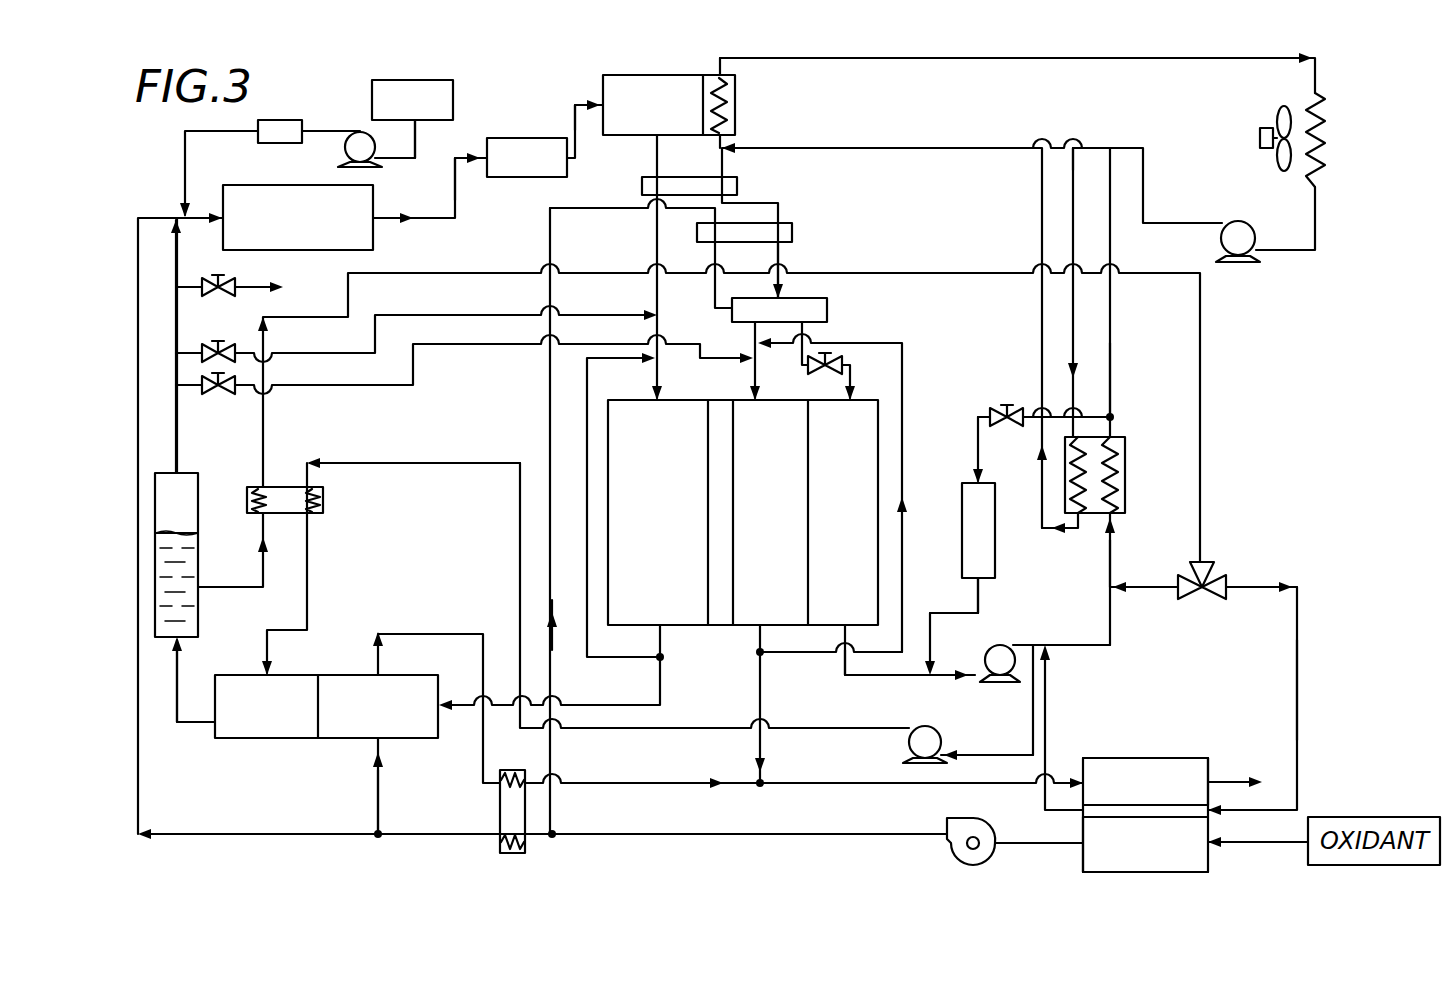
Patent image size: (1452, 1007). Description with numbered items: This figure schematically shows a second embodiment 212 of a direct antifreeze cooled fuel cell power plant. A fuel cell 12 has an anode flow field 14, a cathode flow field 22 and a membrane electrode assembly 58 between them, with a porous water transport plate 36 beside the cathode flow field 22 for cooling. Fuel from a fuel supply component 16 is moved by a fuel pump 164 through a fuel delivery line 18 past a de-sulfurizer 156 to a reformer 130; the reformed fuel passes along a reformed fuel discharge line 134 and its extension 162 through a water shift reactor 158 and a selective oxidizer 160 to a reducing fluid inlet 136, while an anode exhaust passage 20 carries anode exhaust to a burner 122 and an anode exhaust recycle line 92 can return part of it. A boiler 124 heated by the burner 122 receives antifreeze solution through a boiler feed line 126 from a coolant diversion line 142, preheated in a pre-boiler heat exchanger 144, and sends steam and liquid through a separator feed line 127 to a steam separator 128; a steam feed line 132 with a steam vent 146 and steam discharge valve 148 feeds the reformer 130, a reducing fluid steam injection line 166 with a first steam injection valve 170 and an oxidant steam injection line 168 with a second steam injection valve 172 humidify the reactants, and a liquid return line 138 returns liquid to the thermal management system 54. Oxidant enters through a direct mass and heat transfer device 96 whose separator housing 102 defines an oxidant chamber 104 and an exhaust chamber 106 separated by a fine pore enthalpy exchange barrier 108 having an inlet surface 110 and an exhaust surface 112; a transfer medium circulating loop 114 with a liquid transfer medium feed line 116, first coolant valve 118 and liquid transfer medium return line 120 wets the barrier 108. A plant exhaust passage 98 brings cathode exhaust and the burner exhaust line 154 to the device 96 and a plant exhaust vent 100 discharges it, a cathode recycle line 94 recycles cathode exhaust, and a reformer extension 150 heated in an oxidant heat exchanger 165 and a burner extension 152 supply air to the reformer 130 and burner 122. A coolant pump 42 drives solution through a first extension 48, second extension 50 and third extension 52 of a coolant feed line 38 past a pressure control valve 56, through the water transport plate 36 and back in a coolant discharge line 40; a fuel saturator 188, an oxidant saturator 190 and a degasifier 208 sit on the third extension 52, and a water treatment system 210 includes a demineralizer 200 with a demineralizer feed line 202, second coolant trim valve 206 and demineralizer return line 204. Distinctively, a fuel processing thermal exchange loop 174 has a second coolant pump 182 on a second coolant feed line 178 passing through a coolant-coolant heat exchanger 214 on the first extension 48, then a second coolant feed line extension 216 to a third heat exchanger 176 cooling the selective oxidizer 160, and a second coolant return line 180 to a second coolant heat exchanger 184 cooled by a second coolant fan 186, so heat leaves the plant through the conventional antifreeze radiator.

The fuel cell 12 is at (718, 660).
The anode flow field 14 is at (683, 512).
The fuel supply component 16 is at (454, 87).
The fuel delivery line 18 is at (416, 150).
The anode exhaust passage 20 is at (592, 703).
The cathode flow field 22 is at (793, 512).
The porous water transport plate 36 is at (863, 512).
The coolant feed line 38 is at (845, 365).
The coolant discharge line 40 is at (862, 676).
The coolant pump 42 is at (992, 679).
The coolant feed line first extension 48 is at (1115, 556).
The coolant feed line second extension 50 is at (1112, 353).
The coolant feed line third extension 52 is at (781, 256).
The thermal management system 54 is at (1043, 600).
The pressure control valve 56 is at (810, 368).
The membrane electrode assembly 58 is at (722, 400).
The anode exhaust recycle line 92 is at (587, 651).
The cathode recycle line 94 is at (905, 616).
The direct mass and heat transfer device 96 is at (1136, 757).
The plant exhaust passage 98 is at (891, 785).
The plant exhaust vent 100 is at (1222, 778).
The separator housing 102 is at (1083, 858).
The oxidant chamber 104 is at (1203, 867).
The exhaust chamber 106 is at (1097, 764).
The fine pore enthalpy exchange barrier 108 is at (1161, 812).
The inlet surface 110 is at (1104, 817).
The exhaust surface 112 is at (1127, 804).
The transfer medium circulating loop 114 is at (1228, 633).
The liquid transfer medium feed line 116 is at (1300, 686).
The first coolant valve 118 is at (1222, 571).
The liquid transfer medium return line 120 is at (1051, 691).
The burner 122 is at (421, 738).
The boiler 124 is at (251, 729).
The boiler feed line 126 is at (433, 463).
The separator feed line 127 is at (191, 726).
The steam separator 128 is at (187, 491).
The reformer 130 is at (374, 240).
The steam feed line 132 is at (178, 444).
The reformed fuel discharge line 134 is at (461, 195).
The reducing fluid inlet 136 is at (656, 163).
The liquid return line 138 is at (265, 414).
The coolant diversion line 142 is at (1013, 753).
The pre-boiler heat exchanger 144 is at (281, 487).
The steam vent 146 is at (251, 286).
The steam discharge valve 148 is at (237, 292).
The reformer extension of the oxidant inlet 150 is at (291, 836).
The burner extension of the oxidant inlet 152 is at (378, 794).
The burner exhaust line 154 is at (428, 632).
The de-sulfurizer 156 is at (297, 121).
The water shift reactor 158 is at (548, 171).
The selective oxidizer 160 is at (614, 90).
The extension of the reformed fuel discharge line 162 is at (575, 118).
The fuel pump 164 is at (346, 151).
The oxidant heat exchanger 165 is at (513, 853).
The reducing fluid steam injection line 166 is at (428, 316).
The oxidant steam injection line 168 is at (436, 347).
The first steam injection valve 170 is at (216, 349).
The second steam injection valve 172 is at (212, 394).
The fuel processing thermal exchange loop 174 is at (1156, 101).
The third heat exchanger 176 is at (741, 85).
The second coolant feed line 178 is at (1073, 148).
The second coolant return line 180 is at (871, 62).
The second coolant pump 182 is at (1236, 223).
The second coolant heat exchanger 184 is at (1327, 126).
The second coolant fan 186 is at (1262, 134).
The fuel saturator 188 is at (734, 178).
The oxidant saturator 190 is at (793, 232).
The demineralizer 200 is at (965, 496).
The demineralizer feed line 202 is at (1021, 411).
The demineralizer return line 204 is at (935, 623).
The second coolant trim valve 206 is at (991, 413).
The degasifier 208 is at (828, 320).
The water treatment system 210 is at (937, 372).
The second embodiment of the direct antifreeze cooled fuel cell power plant system 212 is at (1308, 311).
The coolant-coolant heat exchanger 214 is at (1127, 491).
The second coolant feed line extension 216 is at (871, 148).